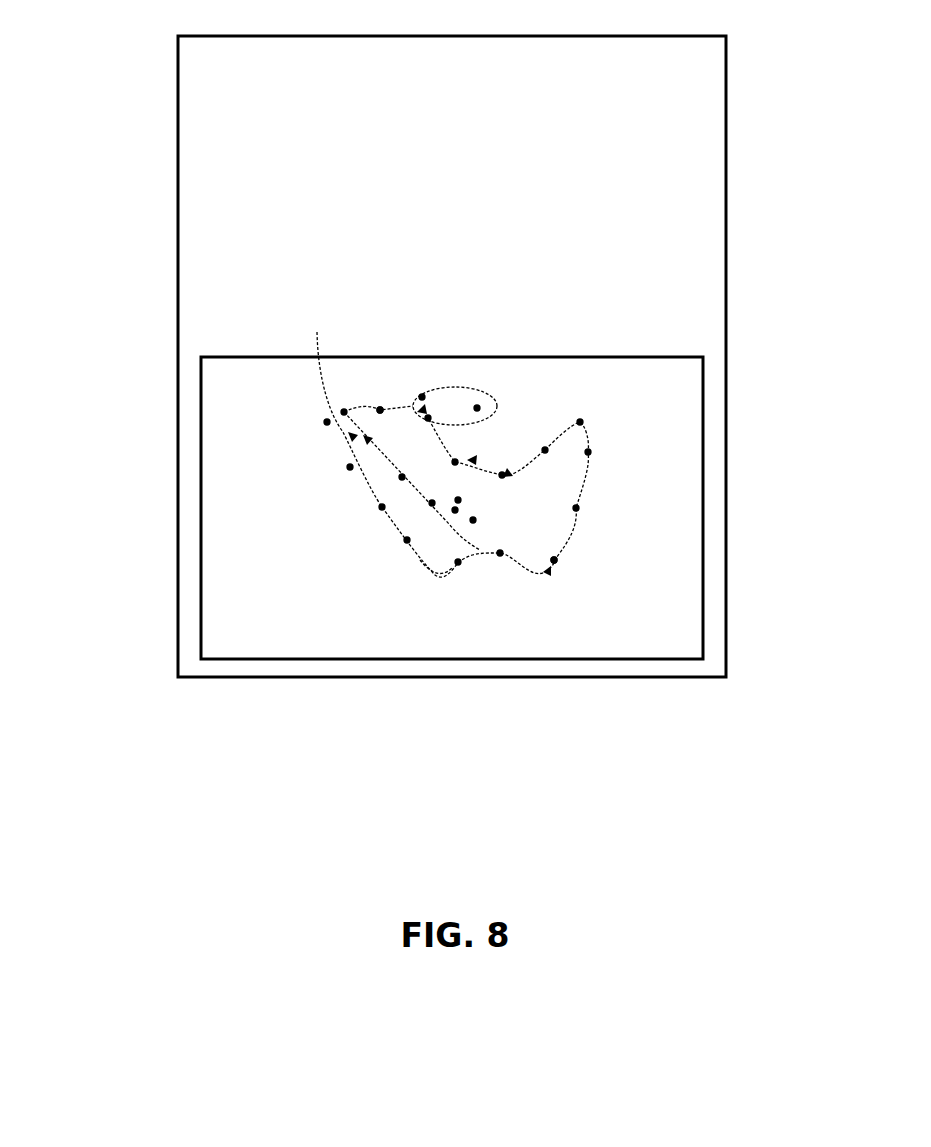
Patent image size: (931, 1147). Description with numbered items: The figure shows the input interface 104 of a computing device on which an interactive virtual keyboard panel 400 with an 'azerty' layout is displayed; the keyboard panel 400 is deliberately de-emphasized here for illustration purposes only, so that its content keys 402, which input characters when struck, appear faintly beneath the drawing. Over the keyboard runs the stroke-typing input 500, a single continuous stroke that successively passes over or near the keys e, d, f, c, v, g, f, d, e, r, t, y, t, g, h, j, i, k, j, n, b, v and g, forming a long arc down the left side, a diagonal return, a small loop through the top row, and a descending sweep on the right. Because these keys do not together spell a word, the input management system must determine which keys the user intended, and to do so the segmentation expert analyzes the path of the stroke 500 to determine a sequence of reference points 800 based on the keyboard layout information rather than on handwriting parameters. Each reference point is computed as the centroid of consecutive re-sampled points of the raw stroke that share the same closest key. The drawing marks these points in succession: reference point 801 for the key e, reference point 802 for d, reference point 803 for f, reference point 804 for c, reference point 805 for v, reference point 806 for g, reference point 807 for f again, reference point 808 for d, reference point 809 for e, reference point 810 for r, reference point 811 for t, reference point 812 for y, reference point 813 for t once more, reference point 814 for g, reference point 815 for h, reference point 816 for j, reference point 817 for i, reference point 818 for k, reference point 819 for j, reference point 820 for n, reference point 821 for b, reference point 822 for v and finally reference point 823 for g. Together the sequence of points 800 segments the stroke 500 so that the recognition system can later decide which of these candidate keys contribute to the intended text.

The input interface 104 is at (731, 80).
The keyboard panel 400 is at (706, 441).
The content keys 402 is at (218, 390).
The stroke-typing input 500 is at (433, 577).
The sequence of reference points 800 is at (303, 277).
The reference point 801 is at (323, 422).
The reference point 802 is at (348, 467).
The reference point 803 is at (380, 507).
The reference point 804 is at (401, 549).
The reference point 805 is at (460, 573).
The reference point 806 is at (430, 503).
The reference point 807 is at (398, 478).
The reference point 808 is at (325, 361).
The reference point 809 is at (347, 408).
The reference point 810 is at (380, 406).
The reference point 811 is at (422, 394).
The reference point 812 is at (480, 405).
The reference point 813 is at (431, 414).
The reference point 814 is at (459, 460).
The reference point 815 is at (505, 472).
The reference point 816 is at (548, 447).
The reference point 817 is at (584, 419).
The reference point 818 is at (592, 452).
The reference point 819 is at (581, 508).
The reference point 820 is at (559, 561).
The reference point 821 is at (557, 565).
The reference point 822 is at (478, 520).
The reference point 823 is at (500, 567).